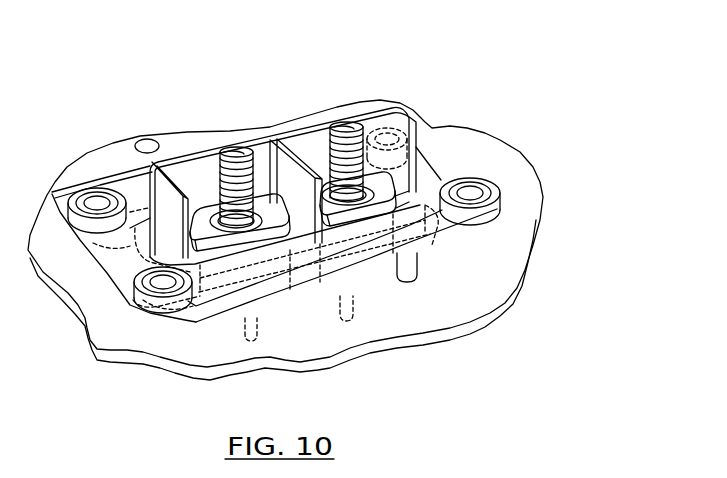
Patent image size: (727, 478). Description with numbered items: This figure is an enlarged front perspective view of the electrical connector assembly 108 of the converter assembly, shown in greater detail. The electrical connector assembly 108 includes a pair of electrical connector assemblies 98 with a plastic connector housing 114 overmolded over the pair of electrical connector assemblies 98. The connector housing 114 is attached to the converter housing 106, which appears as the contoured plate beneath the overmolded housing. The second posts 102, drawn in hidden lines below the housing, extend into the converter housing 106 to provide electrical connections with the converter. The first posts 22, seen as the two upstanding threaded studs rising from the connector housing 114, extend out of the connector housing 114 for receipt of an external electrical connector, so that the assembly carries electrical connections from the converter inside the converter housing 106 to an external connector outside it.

The first posts 22 is at (217, 174).
The electrical connector assemblies 98 is at (240, 153).
The second posts 102 is at (340, 307).
The converter housing 106 is at (517, 190).
The electrical connector assembly 108 is at (537, 88).
The connector housing 114 is at (450, 167).